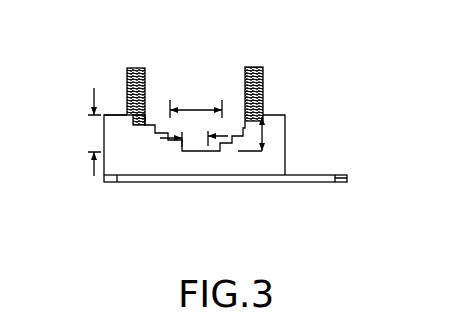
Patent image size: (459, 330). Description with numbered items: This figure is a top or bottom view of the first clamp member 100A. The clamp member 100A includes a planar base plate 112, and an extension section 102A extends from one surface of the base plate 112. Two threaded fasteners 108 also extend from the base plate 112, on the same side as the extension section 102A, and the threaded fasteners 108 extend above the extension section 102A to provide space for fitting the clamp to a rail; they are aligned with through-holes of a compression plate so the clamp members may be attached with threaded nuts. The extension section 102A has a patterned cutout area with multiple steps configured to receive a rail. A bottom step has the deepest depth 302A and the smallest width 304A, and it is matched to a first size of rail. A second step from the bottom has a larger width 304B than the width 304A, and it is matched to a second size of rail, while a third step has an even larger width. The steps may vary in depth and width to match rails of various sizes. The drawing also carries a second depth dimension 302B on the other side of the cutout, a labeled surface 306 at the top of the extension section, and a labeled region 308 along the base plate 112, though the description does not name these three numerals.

The first clamp member 100A is at (372, 79).
The extension section 102A is at (277, 148).
The threaded fasteners 108 is at (263, 73).
The planar base plate 112 is at (300, 182).
The deepest depth 302A is at (265, 130).
The second step height dimension 302B is at (93, 133).
The smallest width 304A is at (192, 136).
The larger width 304B is at (190, 109).
The top surface 306 is at (117, 114).
The base plate 308 is at (201, 183).